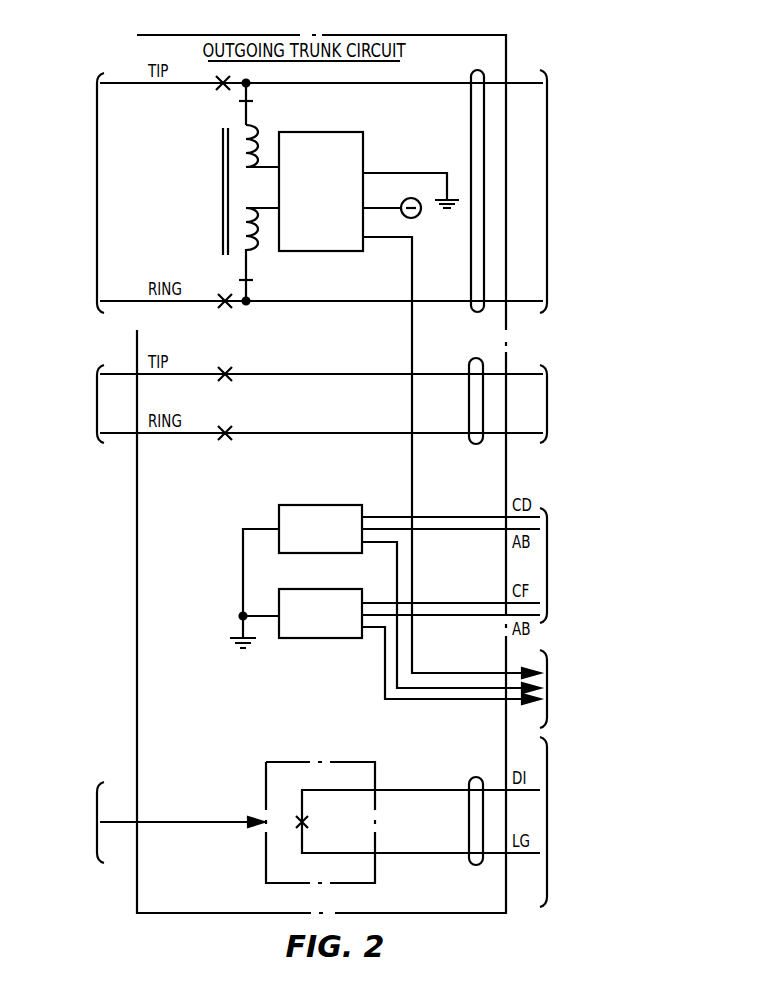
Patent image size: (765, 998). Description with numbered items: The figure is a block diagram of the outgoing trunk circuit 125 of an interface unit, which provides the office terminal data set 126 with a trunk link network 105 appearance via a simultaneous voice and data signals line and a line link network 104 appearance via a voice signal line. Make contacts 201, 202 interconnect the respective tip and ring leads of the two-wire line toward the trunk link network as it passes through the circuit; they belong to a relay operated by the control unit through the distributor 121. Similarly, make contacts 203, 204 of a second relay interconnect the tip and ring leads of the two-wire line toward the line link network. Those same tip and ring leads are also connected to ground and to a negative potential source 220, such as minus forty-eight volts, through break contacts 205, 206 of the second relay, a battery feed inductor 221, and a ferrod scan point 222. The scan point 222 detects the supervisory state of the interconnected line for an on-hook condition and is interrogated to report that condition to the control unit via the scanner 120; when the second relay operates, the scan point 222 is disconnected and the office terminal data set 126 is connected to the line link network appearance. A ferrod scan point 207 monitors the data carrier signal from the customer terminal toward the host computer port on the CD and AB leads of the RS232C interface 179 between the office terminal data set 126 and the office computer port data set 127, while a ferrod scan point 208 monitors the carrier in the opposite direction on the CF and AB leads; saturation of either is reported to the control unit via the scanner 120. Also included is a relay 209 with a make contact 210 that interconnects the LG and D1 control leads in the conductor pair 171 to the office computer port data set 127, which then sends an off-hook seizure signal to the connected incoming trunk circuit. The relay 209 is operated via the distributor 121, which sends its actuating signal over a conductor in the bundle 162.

The outgoing trunk circuit 125 is at (452, 35).
The make contact 203 is at (222, 92).
The break contact 205 is at (257, 103).
The battery feed inductor 221 is at (222, 190).
The ferrod scan point 222 is at (333, 132).
The negative potential source 220 is at (418, 216).
The break contact 206 is at (257, 282).
The make contact 204 is at (221, 306).
The make contact 201 is at (233, 368).
The make contact 202 is at (233, 428).
The ferrod scan point 207 is at (320, 505).
The ferrod scan point 208 is at (320, 589).
The relay 209 is at (345, 762).
The make contact 210 is at (310, 822).
The conductor bundle 162 is at (196, 826).
The conductor pair 171 is at (476, 865).
The line link network 104 is at (72, 193).
The trunk link network 105 is at (72, 404).
The office terminal data set 126 is at (588, 191).
The RS232C interface 179 is at (592, 565).
The scanner 120 is at (574, 689).
The distributor 121 is at (60, 822).
The office computer port data set 127 is at (609, 822).